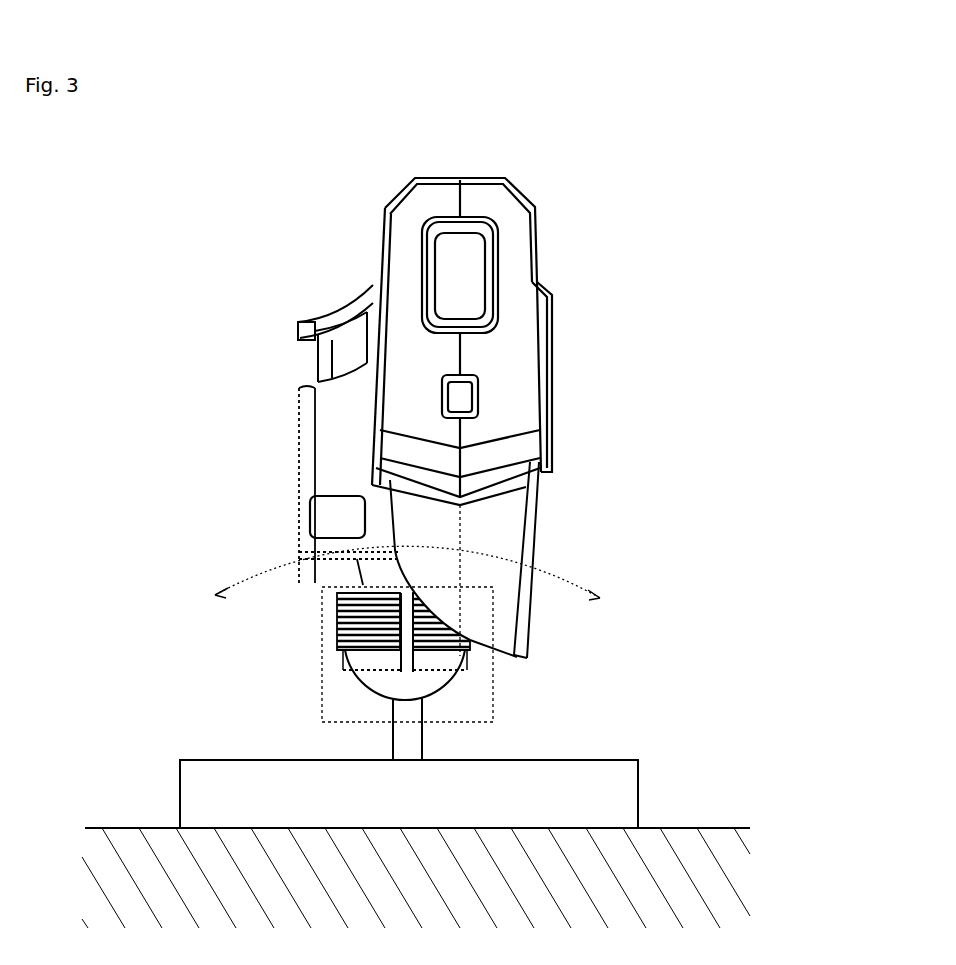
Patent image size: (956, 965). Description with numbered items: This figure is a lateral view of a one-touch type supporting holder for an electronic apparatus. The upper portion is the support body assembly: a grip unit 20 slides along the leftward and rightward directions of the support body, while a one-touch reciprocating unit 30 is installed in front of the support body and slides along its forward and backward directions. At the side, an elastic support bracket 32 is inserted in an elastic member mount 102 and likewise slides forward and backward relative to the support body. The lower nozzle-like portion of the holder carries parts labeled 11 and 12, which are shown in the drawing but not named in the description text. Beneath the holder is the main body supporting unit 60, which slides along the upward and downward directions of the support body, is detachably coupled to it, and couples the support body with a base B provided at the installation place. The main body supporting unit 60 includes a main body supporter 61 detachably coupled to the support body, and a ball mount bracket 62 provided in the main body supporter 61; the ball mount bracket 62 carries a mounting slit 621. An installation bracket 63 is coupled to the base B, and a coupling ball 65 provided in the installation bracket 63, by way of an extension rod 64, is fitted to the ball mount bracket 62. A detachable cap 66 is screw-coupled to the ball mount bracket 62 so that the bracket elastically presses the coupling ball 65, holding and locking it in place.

The grip unit 20 is at (517, 182).
The one-touch reciprocating unit 30 is at (556, 320).
The elastic support bracket 32 is at (333, 347).
The elastic member mount 102 is at (320, 384).
The head cover 12 is at (510, 509).
The head 11 is at (450, 540).
The main body supporting unit 60 is at (128, 738).
The main body supporter 61 is at (325, 584).
The detachable cap 66 is at (405, 606).
The ball mount bracket 62 is at (340, 660).
The coupling ball 65 is at (377, 687).
The extension rod 64 is at (395, 740).
The installation bracket 63 is at (196, 767).
The mounting slit 621 is at (425, 660).
The base B is at (674, 848).